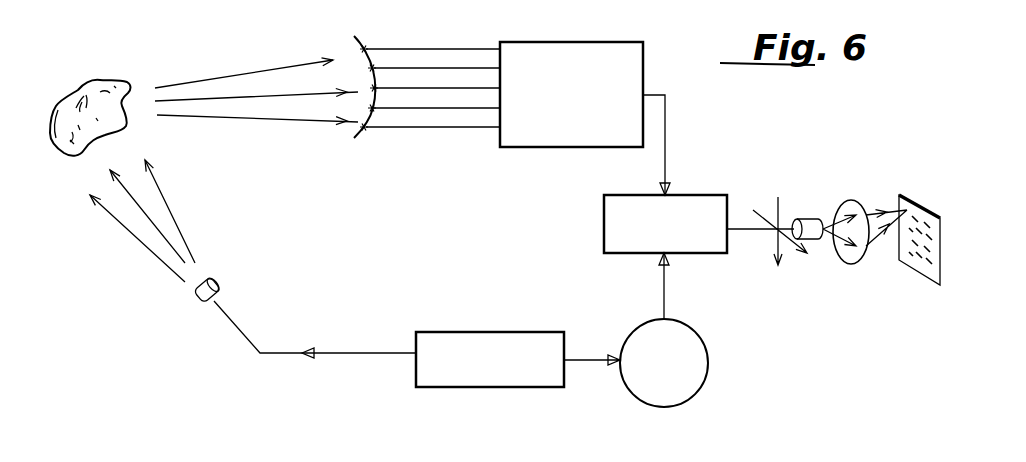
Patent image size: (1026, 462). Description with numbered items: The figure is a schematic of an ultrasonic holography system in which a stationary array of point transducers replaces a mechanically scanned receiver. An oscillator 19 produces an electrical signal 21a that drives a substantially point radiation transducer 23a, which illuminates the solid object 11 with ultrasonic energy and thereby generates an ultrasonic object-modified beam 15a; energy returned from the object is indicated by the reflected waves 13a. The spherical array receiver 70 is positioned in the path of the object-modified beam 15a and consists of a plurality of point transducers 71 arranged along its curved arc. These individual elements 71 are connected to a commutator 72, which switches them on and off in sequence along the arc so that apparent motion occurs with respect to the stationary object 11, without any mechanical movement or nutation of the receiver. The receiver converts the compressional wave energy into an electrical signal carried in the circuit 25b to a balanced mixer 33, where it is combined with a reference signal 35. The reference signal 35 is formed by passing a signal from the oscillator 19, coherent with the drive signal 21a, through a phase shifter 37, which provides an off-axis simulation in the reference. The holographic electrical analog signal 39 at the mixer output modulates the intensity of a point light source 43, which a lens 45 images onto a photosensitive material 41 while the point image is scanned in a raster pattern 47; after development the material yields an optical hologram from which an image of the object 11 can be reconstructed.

The solid object 11 is at (77, 95).
The ultrasonic object-modified beam 15a is at (237, 72).
The reflected acoustic waves 13a is at (162, 212).
The spherical array receiver 70 is at (358, 40).
The point transducers 71 is at (374, 66).
The commutator 72 is at (588, 58).
The electrical signal circuit 25b is at (668, 133).
The balanced mixer 33 is at (693, 198).
The holographic electrical analog signal 39 is at (747, 233).
The point light source 43 is at (813, 220).
The lens 45 is at (840, 255).
The photosensitive material 41 is at (930, 272).
The raster pattern 47 is at (912, 255).
The point radiation transducer 23a is at (214, 281).
The electrical drive signal 21a is at (335, 353).
The oscillator 19 is at (462, 340).
The phase shifter 37 is at (690, 388).
The reference electrical signal 35 is at (666, 296).